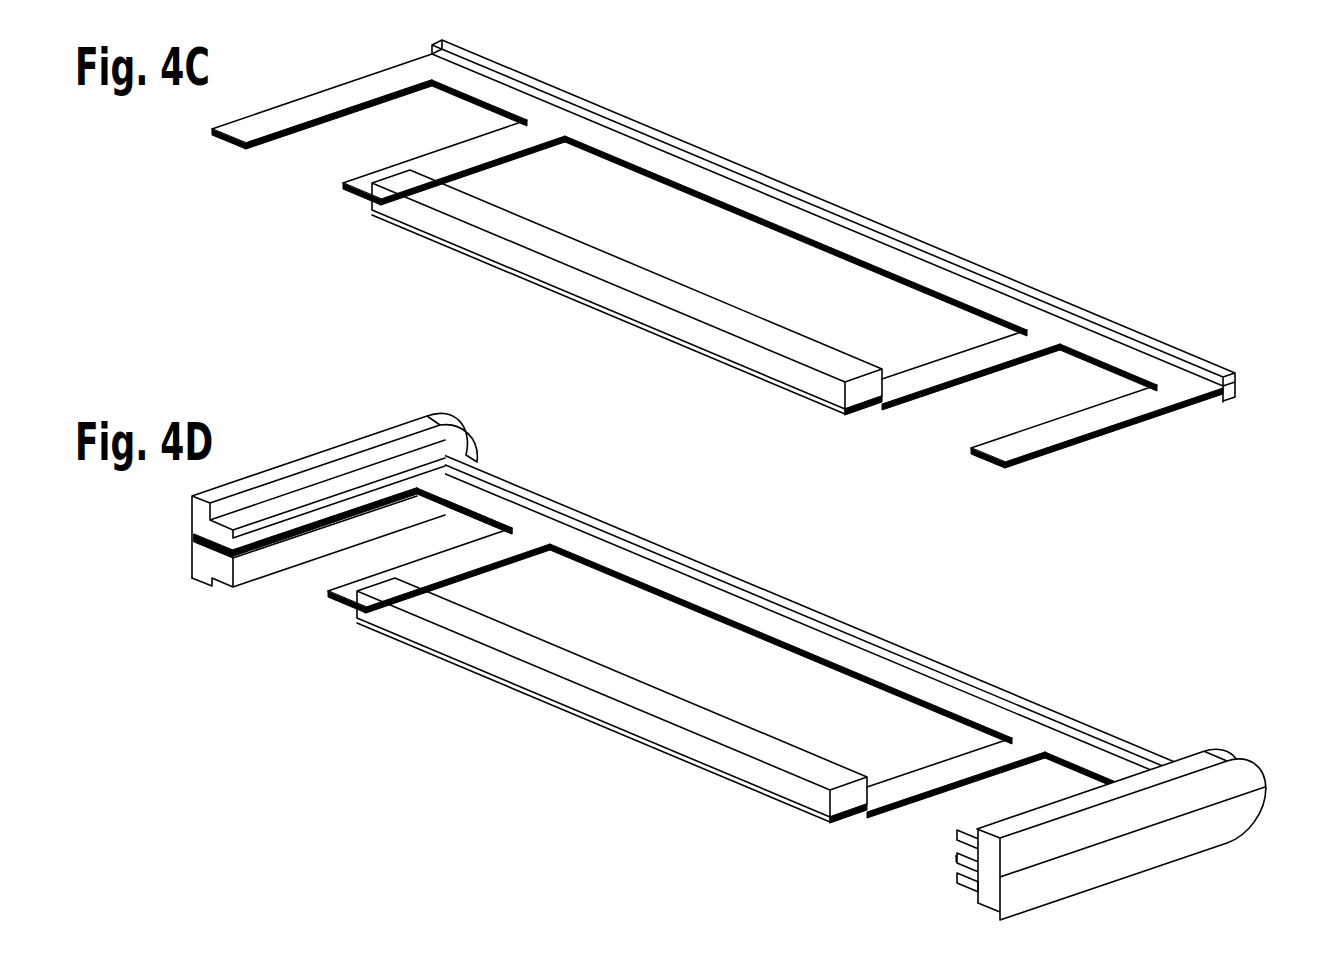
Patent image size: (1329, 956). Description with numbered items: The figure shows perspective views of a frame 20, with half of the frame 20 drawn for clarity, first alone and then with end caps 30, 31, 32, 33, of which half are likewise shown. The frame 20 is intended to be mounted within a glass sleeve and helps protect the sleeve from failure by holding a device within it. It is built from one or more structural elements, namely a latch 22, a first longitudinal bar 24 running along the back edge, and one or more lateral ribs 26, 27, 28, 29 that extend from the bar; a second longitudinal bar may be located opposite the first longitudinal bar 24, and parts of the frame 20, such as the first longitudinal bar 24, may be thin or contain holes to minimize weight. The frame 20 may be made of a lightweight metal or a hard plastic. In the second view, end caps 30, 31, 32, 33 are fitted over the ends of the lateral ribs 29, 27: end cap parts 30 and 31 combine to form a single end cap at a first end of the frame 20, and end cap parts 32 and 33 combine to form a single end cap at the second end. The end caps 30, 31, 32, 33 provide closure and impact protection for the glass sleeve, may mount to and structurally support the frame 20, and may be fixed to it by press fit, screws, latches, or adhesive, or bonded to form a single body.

In FIG. 4C, the frame 20 is at (723, 274).
In FIG. 4D, the frame 20 is at (996, 712).
In FIG. 4C, the latch 22 is at (800, 383).
In FIG. 4C, the first longitudinal bar 24 is at (616, 113).
In FIG. 4C, the lateral rib 26 is at (934, 380).
In FIG. 4C, the lateral rib 27 is at (1050, 438).
In FIG. 4C, the lateral rib 28 is at (440, 156).
In FIG. 4C, the lateral rib 29 is at (260, 128).
In FIG. 4D, the end cap 30 is at (193, 520).
In FIG. 4D, the end cap 31 is at (195, 576).
In FIG. 4D, the end cap 32 is at (1238, 776).
In FIG. 4D, the end cap 33 is at (1216, 824).